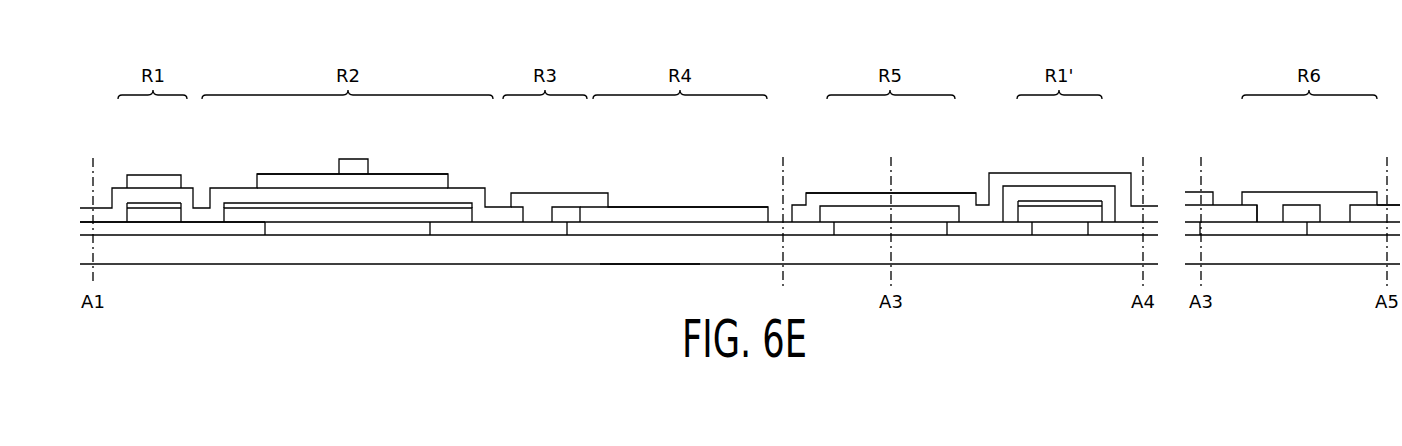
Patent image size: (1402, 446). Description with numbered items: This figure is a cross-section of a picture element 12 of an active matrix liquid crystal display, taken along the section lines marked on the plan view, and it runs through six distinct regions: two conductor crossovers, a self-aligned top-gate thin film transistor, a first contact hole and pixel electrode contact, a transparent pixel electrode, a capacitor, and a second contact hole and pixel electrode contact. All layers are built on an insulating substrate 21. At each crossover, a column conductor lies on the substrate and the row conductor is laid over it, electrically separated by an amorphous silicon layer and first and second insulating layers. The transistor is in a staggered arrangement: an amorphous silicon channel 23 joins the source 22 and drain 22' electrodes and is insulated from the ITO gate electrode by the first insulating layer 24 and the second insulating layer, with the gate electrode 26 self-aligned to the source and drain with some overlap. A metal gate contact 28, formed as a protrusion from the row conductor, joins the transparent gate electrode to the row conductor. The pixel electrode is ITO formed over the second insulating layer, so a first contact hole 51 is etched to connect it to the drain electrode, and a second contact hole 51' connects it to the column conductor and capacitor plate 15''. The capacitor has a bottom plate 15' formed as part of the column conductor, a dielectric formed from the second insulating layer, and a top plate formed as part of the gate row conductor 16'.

The picture element 12 is at (641, 176).
The bottom plate 15' is at (890, 267).
The column conductor/capacitor plate portion 15'' is at (1253, 267).
The gate row conductor 16' is at (891, 157).
The insulating substrate 21 is at (645, 245).
The source electrode 22 is at (253, 267).
The drain electrode 22' is at (498, 267).
The amorphous silicon channel 23 is at (348, 168).
The first insulating layer 24 is at (348, 161).
The gate electrode 26 is at (389, 183).
The gate contact 28 is at (352, 166).
The first contact hole 51 is at (545, 168).
The second contact hole 51' is at (1309, 168).